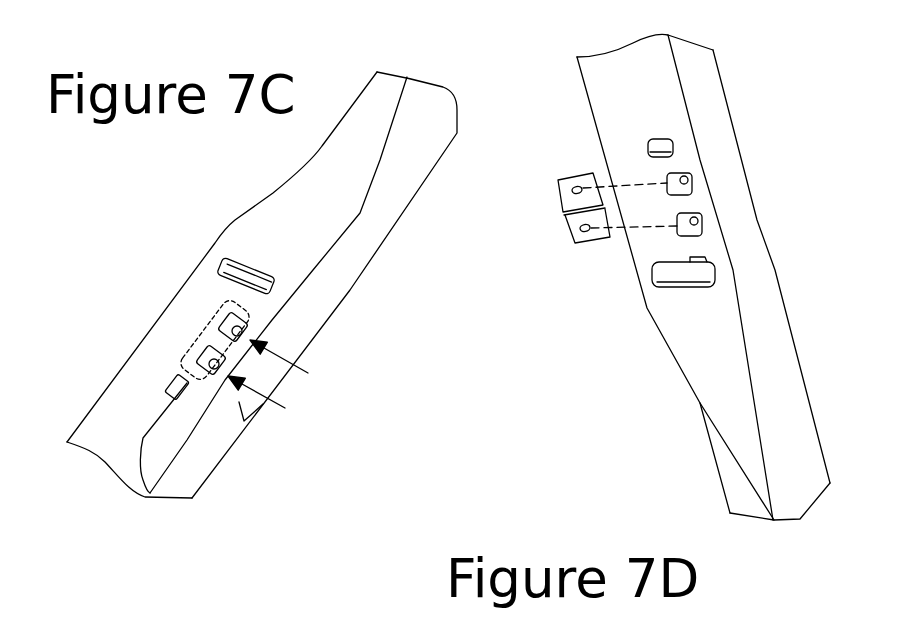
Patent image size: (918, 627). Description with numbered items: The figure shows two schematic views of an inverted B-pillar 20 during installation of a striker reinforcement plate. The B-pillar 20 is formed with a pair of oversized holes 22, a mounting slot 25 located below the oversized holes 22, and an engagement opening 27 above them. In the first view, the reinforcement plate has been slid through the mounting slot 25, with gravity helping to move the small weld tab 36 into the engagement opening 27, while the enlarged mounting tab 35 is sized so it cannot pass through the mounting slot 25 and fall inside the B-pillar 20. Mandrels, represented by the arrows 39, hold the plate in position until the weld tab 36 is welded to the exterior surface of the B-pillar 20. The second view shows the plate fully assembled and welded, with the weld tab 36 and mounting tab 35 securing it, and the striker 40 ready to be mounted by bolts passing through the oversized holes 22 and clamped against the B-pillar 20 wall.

In FIG. 7C, the B-pillar 20 is at (337, 202).
In FIG. 7D, the B-pillar 20 is at (705, 60).
In FIG. 7D, the oversized holes 22 is at (700, 223).
In FIG. 7C, the mounting slot 25 is at (260, 267).
In FIG. 7C, the engagement opening 27 is at (167, 378).
In FIG. 7C, the mounting tab 35 is at (217, 272).
In FIG. 7D, the mounting tab 35 is at (703, 268).
In FIG. 7C, the weld tab 36 is at (142, 466).
In FIG. 7D, the weld tab 36 is at (643, 147).
In FIG. 7C, the arrows 39 is at (308, 373).
In FIG. 7D, the striker 40 is at (567, 232).